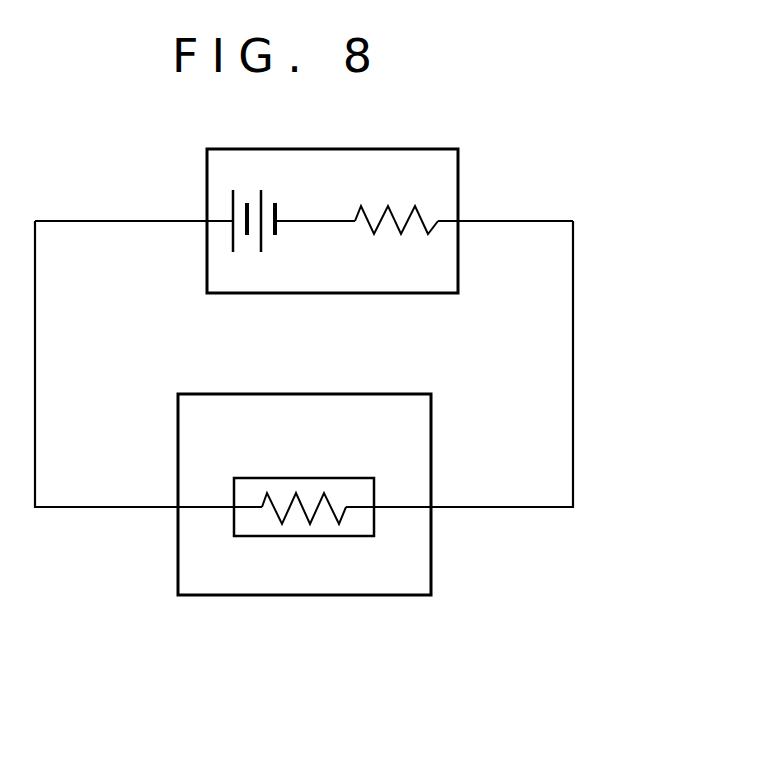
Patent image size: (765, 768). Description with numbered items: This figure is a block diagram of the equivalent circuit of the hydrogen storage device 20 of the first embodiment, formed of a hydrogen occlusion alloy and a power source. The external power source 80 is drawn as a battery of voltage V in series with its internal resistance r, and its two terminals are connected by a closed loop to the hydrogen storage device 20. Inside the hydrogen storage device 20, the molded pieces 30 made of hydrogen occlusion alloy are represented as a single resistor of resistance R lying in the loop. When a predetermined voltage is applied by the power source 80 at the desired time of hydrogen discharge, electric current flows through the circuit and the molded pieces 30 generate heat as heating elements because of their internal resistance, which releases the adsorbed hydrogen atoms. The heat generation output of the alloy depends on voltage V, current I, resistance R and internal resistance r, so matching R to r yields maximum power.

The external power source 80 is at (407, 149).
The hydrogen storage device 20 is at (337, 596).
The molded pieces 30 is at (342, 478).